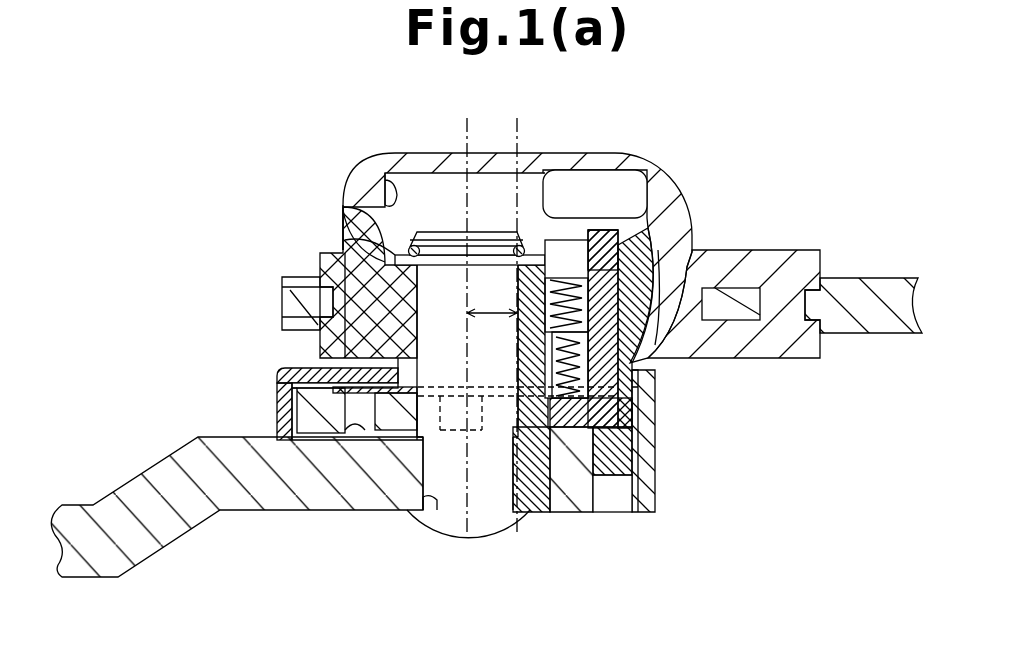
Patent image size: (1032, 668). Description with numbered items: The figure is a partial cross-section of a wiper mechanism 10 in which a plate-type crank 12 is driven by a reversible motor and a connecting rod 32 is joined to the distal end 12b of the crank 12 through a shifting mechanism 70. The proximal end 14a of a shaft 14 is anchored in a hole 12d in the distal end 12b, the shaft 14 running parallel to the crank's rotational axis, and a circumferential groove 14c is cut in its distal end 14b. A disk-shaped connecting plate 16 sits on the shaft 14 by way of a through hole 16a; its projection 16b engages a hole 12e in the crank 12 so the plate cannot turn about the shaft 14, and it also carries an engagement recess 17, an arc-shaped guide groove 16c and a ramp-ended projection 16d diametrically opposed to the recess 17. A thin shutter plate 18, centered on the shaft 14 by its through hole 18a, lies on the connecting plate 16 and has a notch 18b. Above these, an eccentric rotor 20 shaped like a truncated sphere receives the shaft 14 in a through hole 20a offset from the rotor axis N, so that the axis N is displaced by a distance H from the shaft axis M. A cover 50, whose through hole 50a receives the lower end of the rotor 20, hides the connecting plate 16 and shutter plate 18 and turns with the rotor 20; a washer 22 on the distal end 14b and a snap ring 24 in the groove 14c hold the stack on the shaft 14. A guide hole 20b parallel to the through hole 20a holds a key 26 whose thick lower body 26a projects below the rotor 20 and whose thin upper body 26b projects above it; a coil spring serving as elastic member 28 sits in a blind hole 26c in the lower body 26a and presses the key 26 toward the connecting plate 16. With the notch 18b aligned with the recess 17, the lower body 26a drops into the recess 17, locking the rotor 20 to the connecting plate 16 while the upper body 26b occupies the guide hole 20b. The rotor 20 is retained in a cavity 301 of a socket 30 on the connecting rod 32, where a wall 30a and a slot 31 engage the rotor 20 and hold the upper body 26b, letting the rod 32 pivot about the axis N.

The wiper mechanism 10 is at (247, 139).
The crank 12 is at (240, 512).
The distal end of the crank 12b is at (655, 491).
The hole 12d is at (437, 508).
The hole 12e is at (618, 495).
The shaft 14 is at (320, 253).
The proximal end of the shaft 14a is at (490, 497).
The distal end of the shaft 14b is at (443, 230).
The groove 14c is at (393, 240).
The connecting plate 16 is at (313, 440).
The through hole 16a is at (442, 415).
The projection 16b is at (650, 458).
The guide groove 16c is at (360, 433).
The projection 16d is at (293, 386).
The engagement recess 17 is at (655, 430).
The shutter plate 18 is at (308, 357).
The through hole 18a is at (427, 385).
The notch 18b is at (548, 507).
The eccentric rotor 20 is at (300, 297).
The through hole 20a is at (340, 315).
The guide hole 20b is at (747, 265).
The washer 22 is at (370, 235).
The snap ring 24 is at (413, 235).
The key 26 is at (643, 250).
The lower body 26a is at (656, 362).
The upper body 26b is at (613, 237).
The blind hole 26c is at (517, 378).
The elastic member 28 is at (653, 260).
The socket 30 is at (643, 162).
The wall 30a is at (540, 185).
The cavity 301 is at (390, 200).
The slot 31 is at (612, 209).
The connecting rod 32 is at (867, 278).
The cover 50 is at (277, 415).
The through hole 50a is at (640, 380).
The shifting mechanism 70 is at (263, 398).
The distance H is at (492, 298).
The axis of the shaft M is at (466, 306).
The axis of the eccentric rotor N is at (516, 306).